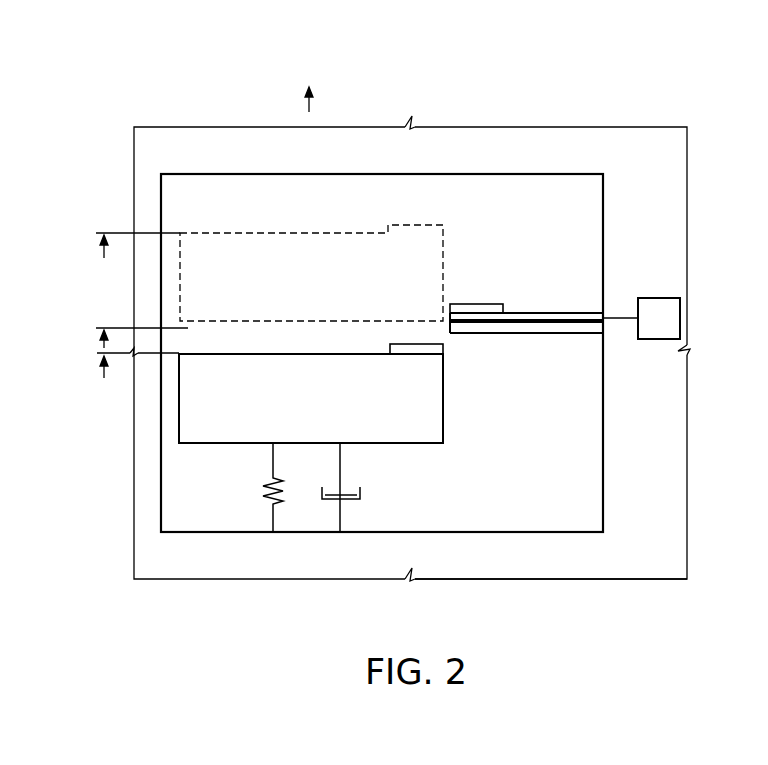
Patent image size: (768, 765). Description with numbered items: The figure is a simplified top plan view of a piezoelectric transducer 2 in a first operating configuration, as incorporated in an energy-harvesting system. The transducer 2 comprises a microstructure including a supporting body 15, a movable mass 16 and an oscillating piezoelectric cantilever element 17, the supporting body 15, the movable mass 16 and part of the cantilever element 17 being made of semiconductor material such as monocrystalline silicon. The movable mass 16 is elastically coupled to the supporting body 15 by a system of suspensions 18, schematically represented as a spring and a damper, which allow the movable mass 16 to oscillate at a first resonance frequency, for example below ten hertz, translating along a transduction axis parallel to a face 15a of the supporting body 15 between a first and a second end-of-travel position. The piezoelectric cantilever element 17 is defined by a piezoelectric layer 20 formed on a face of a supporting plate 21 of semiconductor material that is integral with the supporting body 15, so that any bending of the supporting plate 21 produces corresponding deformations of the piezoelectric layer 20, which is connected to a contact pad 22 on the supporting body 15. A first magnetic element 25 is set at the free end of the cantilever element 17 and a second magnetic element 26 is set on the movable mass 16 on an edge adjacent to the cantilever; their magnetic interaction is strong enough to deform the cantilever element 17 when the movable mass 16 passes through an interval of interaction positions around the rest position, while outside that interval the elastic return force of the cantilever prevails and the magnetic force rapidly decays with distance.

The transducer 2 is at (548, 83).
The supporting body 15 is at (215, 127).
The face of the supporting body 15a is at (609, 573).
The movable mass 16 is at (290, 243).
The piezoelectric cantilever element 17 is at (469, 278).
The suspensions 18 is at (375, 497).
The piezoelectric layer 20 is at (553, 313).
The supporting plate 21 is at (548, 334).
The contact pad 22 is at (672, 318).
The first magnetic element 25 is at (487, 304).
The second magnetic element 26 is at (424, 342).